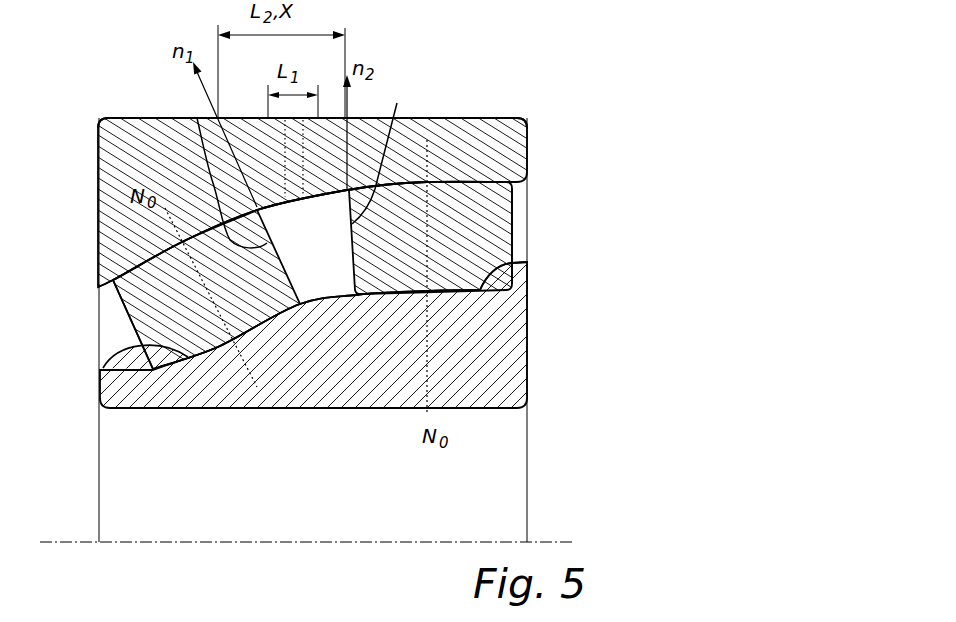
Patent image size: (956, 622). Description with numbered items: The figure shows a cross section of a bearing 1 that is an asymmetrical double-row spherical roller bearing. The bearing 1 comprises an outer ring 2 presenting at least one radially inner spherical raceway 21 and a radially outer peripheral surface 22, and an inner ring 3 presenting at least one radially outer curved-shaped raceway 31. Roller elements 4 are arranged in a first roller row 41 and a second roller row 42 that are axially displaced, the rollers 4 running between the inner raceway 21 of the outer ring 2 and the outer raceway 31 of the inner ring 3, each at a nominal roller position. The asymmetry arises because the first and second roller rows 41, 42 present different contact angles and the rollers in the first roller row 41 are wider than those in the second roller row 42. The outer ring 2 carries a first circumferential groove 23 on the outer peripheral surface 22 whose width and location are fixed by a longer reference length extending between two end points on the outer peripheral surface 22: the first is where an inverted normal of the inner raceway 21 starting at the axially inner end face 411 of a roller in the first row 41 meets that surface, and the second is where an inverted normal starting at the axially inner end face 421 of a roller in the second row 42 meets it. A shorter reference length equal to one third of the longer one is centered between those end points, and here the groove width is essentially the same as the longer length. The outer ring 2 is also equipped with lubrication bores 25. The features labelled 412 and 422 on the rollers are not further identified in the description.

The bearing 1 is at (560, 130).
The outer ring 2 is at (527, 160).
The inner ring 3 is at (527, 355).
The roller elements 4 is at (133, 333).
The radially inner spherical raceway 21 is at (98, 292).
The radially outer peripheral surface 22 is at (132, 118).
The first circumferential groove 23 is at (262, 120).
The lubrication bores 25 is at (298, 202).
The radially outer curved-shaped raceway 31 is at (100, 370).
The first roller row 41 is at (136, 330).
The second roller row 42 is at (527, 240).
The axially inner end face of a roller in the first roller row 411 is at (197, 118).
The large end face of first roller 412 is at (123, 308).
The axially inner end face of a roller in the second roller row 421 is at (397, 103).
The end face of second roller 422 is at (527, 210).